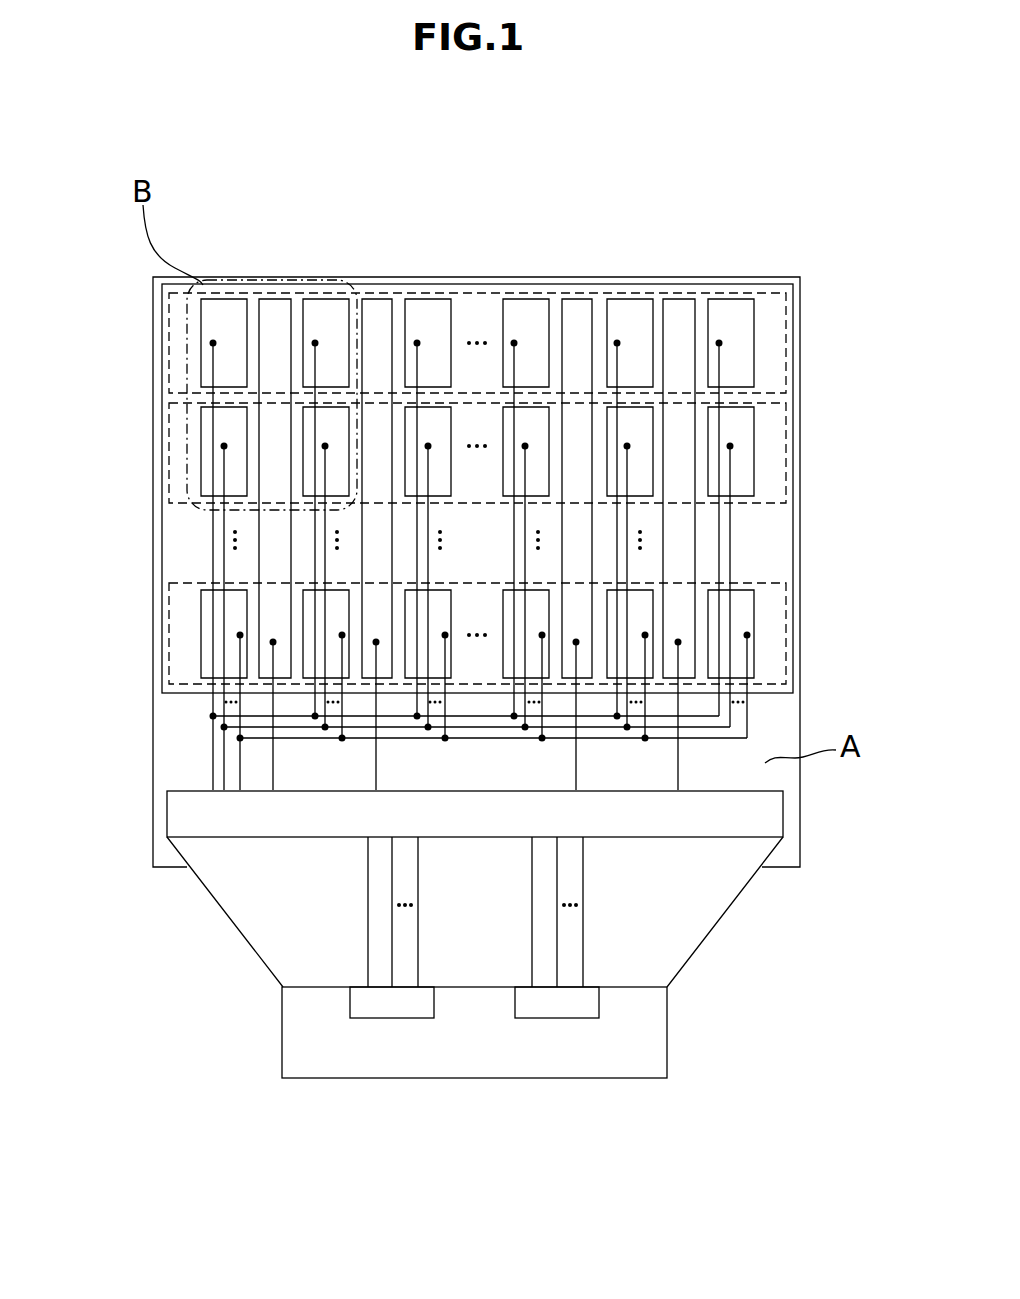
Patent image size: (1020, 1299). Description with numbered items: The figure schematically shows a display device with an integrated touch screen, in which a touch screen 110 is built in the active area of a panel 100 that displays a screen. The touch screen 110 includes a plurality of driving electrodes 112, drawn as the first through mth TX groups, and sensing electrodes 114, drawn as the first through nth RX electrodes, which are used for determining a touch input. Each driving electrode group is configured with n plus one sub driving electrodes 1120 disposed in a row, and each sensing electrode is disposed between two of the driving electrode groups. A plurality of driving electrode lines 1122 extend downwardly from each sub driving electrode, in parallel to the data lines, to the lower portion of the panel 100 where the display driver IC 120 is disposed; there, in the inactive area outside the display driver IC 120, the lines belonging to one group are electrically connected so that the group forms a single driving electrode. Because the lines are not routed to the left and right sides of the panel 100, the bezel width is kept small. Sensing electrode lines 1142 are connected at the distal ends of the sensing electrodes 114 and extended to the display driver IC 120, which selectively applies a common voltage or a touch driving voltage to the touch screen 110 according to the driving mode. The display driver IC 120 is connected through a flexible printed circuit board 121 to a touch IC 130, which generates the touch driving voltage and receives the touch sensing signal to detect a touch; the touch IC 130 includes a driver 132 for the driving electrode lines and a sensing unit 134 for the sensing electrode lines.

The panel 100 is at (800, 341).
The touch screen 110 is at (793, 462).
The driving electrodes 112 is at (168, 302).
The sensing electrodes 114 is at (288, 300).
The sub driving electrodes 1120 is at (212, 300).
The driving electrode lines 1122 is at (212, 533).
The sensing electrode lines 1142 is at (273, 708).
The display driver IC 120 is at (783, 813).
The flexible printed circuit board 121 is at (738, 908).
The touch IC 130 is at (667, 1032).
The driver (transmitter) 132 is at (372, 1018).
The sensing unit 134 is at (580, 1018).